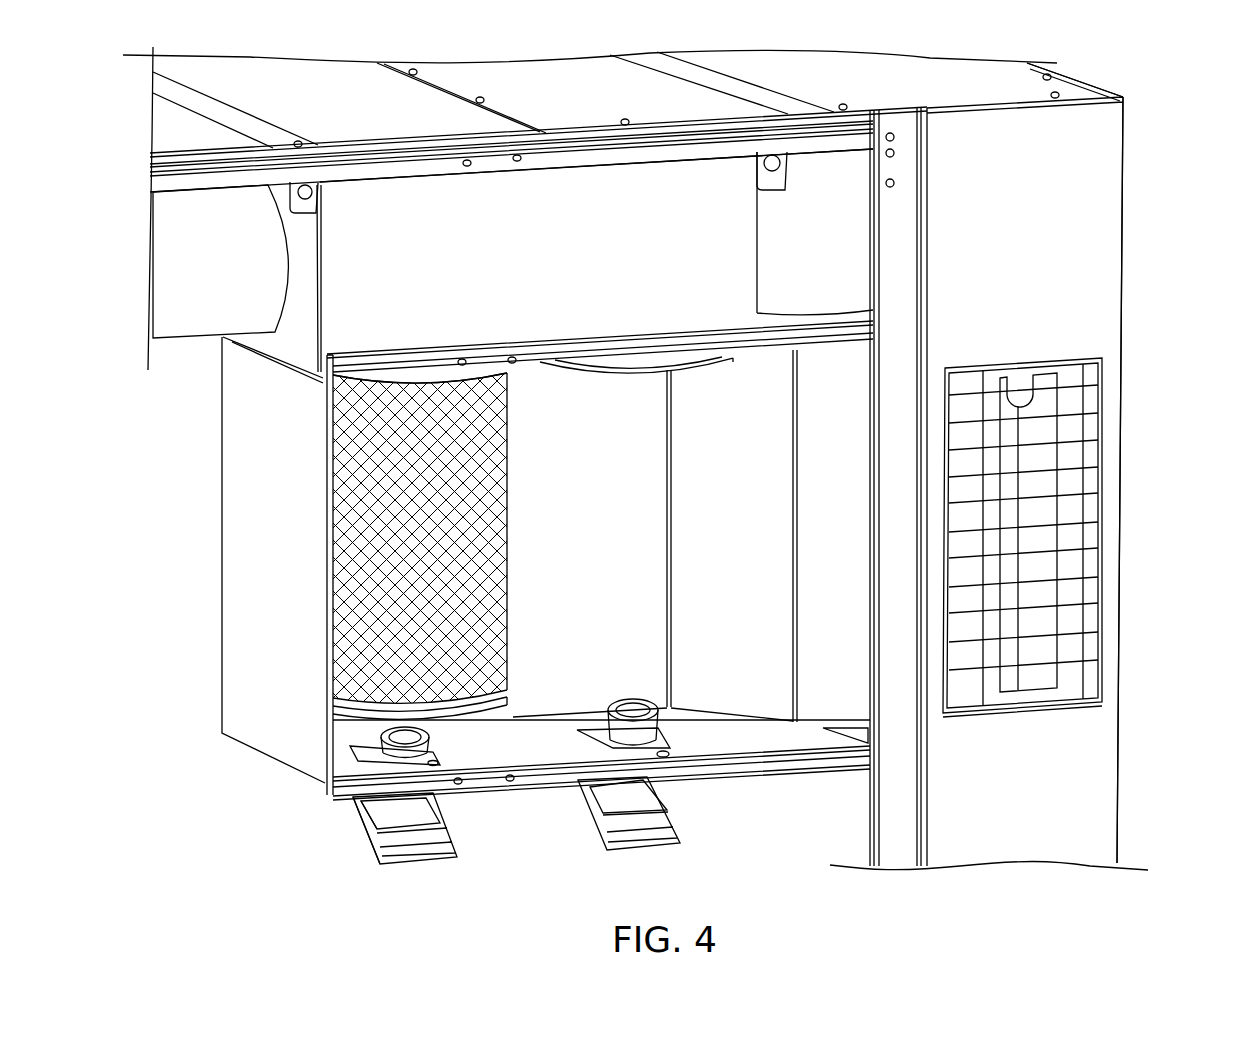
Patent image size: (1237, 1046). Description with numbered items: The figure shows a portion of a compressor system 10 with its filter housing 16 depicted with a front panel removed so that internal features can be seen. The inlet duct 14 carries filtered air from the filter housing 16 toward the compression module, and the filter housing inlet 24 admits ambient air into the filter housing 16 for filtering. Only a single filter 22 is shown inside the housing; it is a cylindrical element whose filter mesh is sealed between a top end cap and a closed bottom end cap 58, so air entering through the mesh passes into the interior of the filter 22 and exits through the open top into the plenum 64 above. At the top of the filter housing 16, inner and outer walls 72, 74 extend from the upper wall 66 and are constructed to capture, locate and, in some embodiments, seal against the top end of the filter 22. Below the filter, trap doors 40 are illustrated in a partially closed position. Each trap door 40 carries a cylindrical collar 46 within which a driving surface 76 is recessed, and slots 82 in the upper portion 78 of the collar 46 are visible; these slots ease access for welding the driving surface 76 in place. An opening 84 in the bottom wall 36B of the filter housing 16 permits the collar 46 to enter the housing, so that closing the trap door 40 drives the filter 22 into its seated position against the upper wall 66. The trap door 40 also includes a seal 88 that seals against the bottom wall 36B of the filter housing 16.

The compressor system 10 is at (1150, 80).
The inlet duct 14 is at (233, 271).
The filter housing 16 is at (222, 593).
The filter 22 is at (430, 544).
The filter housing inlet 24 is at (1040, 472).
The bottom wall 36B is at (573, 751).
The trap door 40 is at (457, 850).
The collar 46 is at (370, 830).
The bottom end cap 58 is at (337, 705).
The plenum 64 is at (553, 261).
The upper wall 66 is at (535, 367).
The inner wall 72 is at (720, 360).
The outer wall 74 is at (373, 415).
The driving surface 76 is at (342, 730).
The upper portion 78 is at (327, 780).
The slots 82 is at (433, 762).
The opening 84 is at (322, 772).
The seal 88 is at (442, 808).